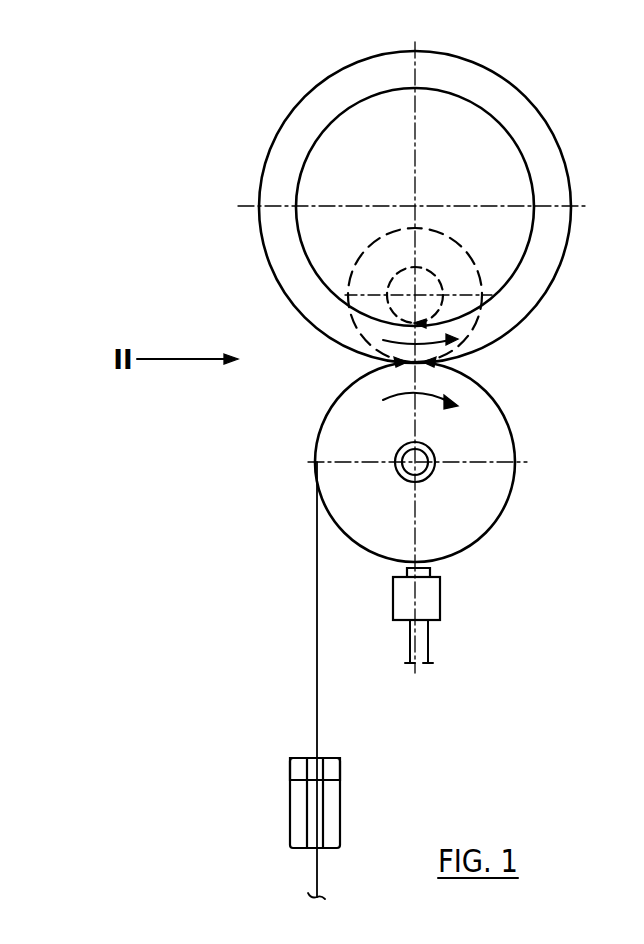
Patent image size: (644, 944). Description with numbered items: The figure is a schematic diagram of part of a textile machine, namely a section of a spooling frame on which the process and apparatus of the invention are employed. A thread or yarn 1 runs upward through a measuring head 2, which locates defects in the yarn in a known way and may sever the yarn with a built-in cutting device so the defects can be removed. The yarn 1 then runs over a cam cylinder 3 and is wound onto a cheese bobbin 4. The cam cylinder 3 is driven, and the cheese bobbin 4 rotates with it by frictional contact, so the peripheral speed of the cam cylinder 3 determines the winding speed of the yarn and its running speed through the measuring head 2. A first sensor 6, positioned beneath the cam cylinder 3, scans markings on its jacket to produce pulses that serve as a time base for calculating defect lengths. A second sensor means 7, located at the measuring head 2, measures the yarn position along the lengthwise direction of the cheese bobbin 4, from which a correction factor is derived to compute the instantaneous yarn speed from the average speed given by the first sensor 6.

The yarn 1 is at (316, 607).
The measuring head 2 is at (290, 808).
The cam cylinder 3 is at (330, 413).
The cheese bobbin 4 is at (257, 192).
The first sensor 6 is at (443, 595).
The second sensor means 7 is at (340, 766).